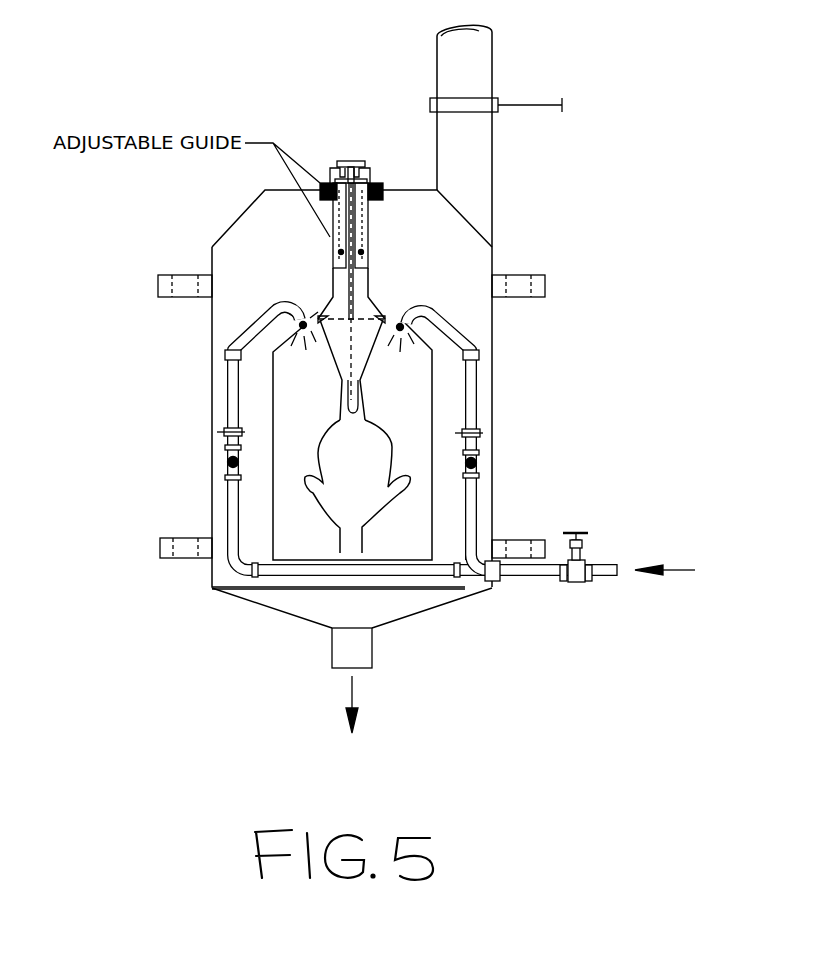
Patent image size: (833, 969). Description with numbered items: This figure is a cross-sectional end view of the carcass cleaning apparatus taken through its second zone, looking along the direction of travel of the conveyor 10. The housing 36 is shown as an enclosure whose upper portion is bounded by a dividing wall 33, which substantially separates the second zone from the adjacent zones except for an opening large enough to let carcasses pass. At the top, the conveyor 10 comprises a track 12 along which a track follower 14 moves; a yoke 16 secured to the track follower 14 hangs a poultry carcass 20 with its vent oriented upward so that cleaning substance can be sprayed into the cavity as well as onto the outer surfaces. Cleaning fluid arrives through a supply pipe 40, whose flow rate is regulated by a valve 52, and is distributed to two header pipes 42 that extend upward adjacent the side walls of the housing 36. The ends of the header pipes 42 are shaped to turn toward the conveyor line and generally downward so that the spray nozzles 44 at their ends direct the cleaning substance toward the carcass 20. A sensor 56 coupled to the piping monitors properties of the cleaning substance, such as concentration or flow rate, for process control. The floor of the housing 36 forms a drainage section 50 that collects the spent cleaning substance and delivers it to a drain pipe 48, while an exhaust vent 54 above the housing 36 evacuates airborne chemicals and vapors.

The conveyor 10 is at (318, 150).
The track 12 is at (347, 160).
The track follower 14 is at (370, 174).
The yoke 16 is at (303, 325).
The poultry carcass 20 is at (335, 495).
The dividing wall 33 is at (432, 240).
The housing 36 is at (492, 258).
The supply pipe 40 is at (423, 570).
The header pipe 42 is at (233, 406).
The spray nozzle 44 is at (403, 325).
The drain pipe 48 is at (375, 694).
The drainage section 50 is at (300, 612).
The valve 52 is at (575, 578).
The exhaust vent 54 is at (482, 80).
The sensor 56 is at (480, 463).